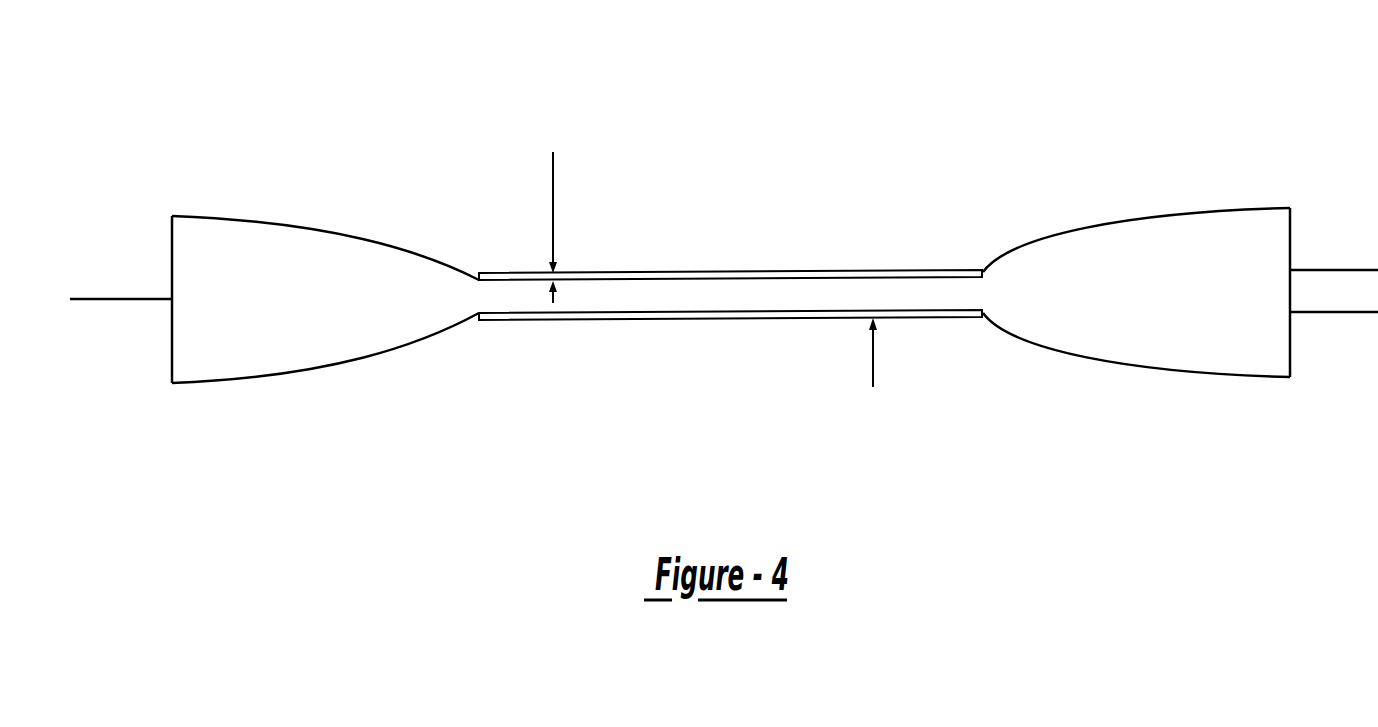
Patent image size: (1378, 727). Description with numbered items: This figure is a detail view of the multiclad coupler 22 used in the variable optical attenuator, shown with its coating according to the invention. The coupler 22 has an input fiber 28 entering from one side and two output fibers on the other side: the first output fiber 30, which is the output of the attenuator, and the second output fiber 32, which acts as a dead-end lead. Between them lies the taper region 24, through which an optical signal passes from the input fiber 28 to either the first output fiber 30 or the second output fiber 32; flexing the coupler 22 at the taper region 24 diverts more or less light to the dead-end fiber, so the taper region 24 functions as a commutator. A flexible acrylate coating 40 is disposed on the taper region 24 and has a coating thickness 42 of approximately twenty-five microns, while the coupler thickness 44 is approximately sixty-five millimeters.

The multiclad coupler 22 is at (389, 68).
The taper region 24 is at (730, 201).
The input fiber 28 is at (274, 268).
The first output fiber 30 is at (1162, 265).
The second output fiber 32 is at (1334, 357).
The flexible acrylate coating 40 is at (730, 344).
The coating thickness 42 is at (591, 227).
The coupler thickness 44 is at (850, 294).